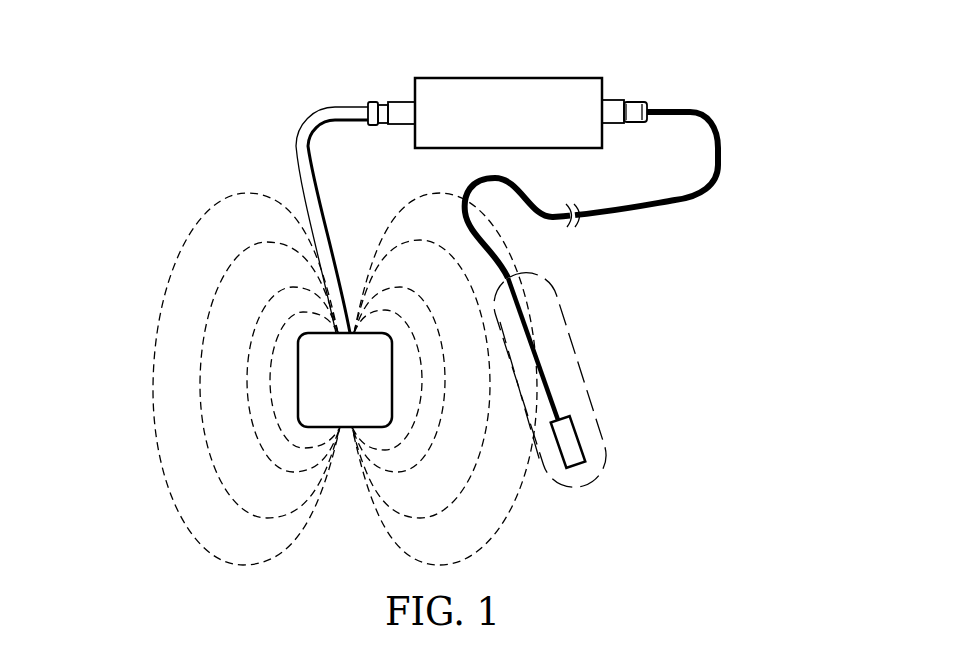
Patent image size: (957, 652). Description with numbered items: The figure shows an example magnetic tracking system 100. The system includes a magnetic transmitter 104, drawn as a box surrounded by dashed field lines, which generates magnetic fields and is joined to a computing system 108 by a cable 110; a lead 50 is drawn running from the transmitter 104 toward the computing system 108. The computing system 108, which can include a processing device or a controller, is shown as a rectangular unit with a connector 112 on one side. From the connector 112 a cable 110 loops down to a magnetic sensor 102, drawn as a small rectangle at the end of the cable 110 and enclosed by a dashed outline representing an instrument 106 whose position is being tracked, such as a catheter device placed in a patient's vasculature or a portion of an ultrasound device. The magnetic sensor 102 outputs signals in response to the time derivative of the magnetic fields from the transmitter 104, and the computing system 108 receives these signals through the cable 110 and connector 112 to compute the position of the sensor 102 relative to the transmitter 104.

The magnetic tracking system 100 is at (290, 63).
The lead / tube 50 is at (293, 157).
The magnetic sensor 102 is at (568, 466).
The magnetic transmitter 104 is at (366, 392).
The instrument 106 is at (562, 316).
The computing system 108 is at (529, 126).
The cable 110 is at (722, 151).
The connector 112 is at (612, 100).